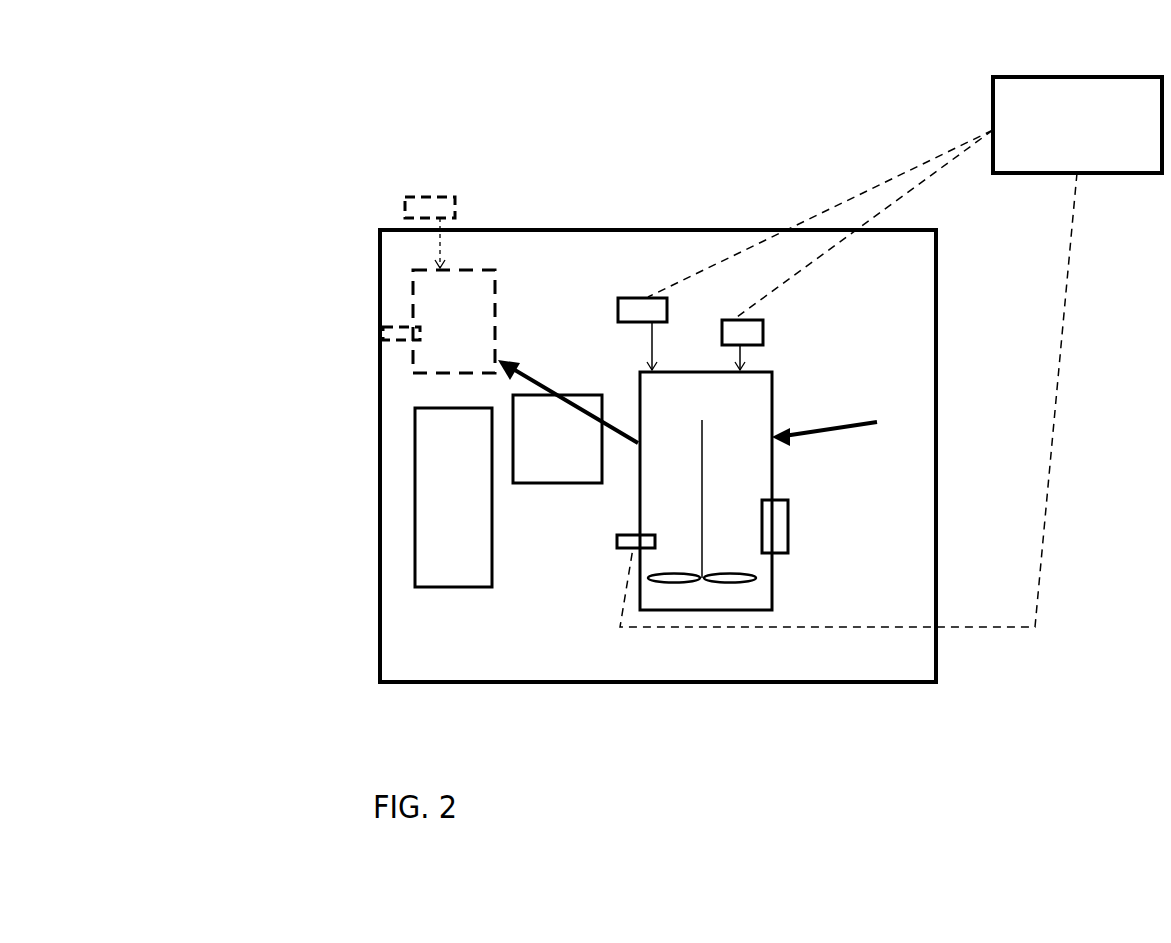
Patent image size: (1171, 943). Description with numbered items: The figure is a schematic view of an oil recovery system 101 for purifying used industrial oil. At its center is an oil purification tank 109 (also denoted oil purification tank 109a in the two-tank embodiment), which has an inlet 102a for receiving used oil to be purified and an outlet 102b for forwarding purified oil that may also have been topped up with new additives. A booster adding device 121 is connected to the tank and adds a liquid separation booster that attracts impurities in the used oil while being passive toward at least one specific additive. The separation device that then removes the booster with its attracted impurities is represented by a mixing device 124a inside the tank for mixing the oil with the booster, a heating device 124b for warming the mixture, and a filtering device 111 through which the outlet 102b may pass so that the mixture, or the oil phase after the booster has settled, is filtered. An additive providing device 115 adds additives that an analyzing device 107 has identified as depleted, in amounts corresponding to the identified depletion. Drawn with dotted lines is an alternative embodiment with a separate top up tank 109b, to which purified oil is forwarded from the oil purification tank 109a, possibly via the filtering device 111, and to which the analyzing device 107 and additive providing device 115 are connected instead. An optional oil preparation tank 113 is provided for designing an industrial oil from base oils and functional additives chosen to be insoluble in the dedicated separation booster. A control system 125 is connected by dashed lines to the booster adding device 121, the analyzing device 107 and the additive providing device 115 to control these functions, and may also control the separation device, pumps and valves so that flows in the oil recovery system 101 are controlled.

The oil recovery system 101 is at (378, 525).
The inlet 102a is at (852, 422).
The outlet 102b is at (563, 393).
The analyzing device 107 is at (383, 333).
The oil purification tank 109 is at (772, 408).
The oil purification tank 109a is at (820, 388).
The top up tank 109b is at (413, 302).
The filtering device 111 is at (583, 456).
The oil preparation tank 113 is at (480, 517).
The additive providing device 115 is at (422, 195).
The booster adding device 121 is at (763, 320).
The mixing device 124a is at (757, 582).
The heating device 124b is at (788, 525).
The control system 125 is at (1103, 143).